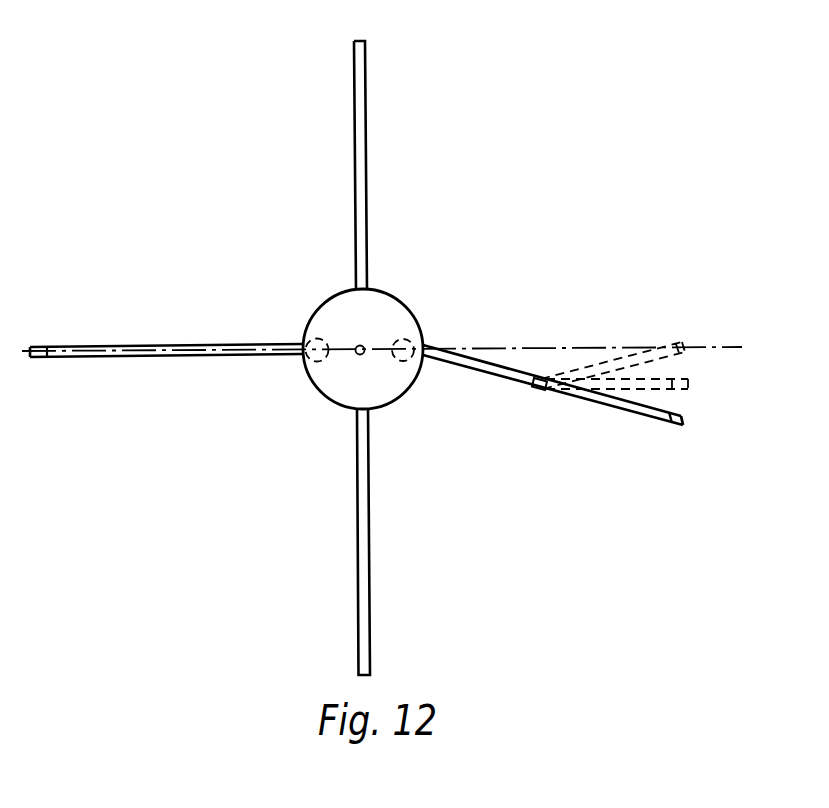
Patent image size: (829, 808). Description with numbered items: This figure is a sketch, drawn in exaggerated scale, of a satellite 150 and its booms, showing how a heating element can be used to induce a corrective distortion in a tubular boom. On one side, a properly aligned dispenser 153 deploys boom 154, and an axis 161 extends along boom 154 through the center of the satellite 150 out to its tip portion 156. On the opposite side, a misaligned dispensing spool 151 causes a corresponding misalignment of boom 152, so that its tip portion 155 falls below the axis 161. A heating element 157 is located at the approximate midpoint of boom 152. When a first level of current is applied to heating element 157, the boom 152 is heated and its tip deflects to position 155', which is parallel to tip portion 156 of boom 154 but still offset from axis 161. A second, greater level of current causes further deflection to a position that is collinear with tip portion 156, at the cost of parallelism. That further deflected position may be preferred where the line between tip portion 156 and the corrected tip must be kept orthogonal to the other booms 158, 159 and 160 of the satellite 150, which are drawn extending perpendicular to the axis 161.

The satellite 150 is at (398, 395).
The misaligned dispensing spool 151 is at (397, 342).
The boom 152 is at (463, 365).
The properly aligned dispenser 153 is at (340, 330).
The boom 154 is at (200, 342).
The tip portion 155 is at (701, 428).
The deflected tip position 155' is at (644, 386).
The tip portion 156 is at (37, 344).
The heating element 157 is at (542, 388).
The boom 158 is at (366, 148).
The boom 159 is at (370, 541).
The boom 160 is at (362, 357).
The axis 161 is at (733, 343).